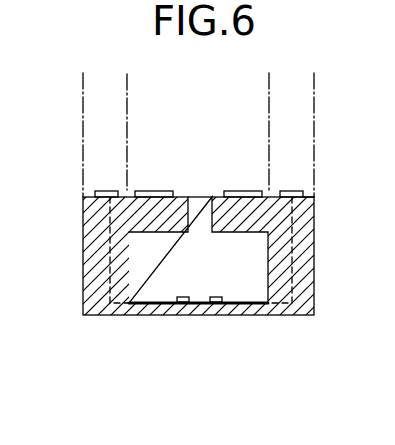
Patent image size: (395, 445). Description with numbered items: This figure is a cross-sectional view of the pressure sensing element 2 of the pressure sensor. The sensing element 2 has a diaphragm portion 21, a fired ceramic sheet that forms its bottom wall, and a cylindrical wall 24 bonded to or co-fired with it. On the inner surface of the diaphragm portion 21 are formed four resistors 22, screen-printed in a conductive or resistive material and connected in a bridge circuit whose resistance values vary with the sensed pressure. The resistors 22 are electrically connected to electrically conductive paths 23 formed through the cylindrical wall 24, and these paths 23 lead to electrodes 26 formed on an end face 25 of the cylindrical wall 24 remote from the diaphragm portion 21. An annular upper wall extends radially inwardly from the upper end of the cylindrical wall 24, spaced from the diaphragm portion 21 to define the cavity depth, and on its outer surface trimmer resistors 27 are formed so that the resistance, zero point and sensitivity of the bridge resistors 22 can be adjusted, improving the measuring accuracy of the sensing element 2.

The pressure sensing element 2 is at (290, 334).
The diaphragm portion 21 is at (148, 306).
The resistors 22 is at (181, 297).
The electrically conductive paths 23 is at (110, 268).
The cylindrical wall 24 is at (308, 228).
The end face 25 is at (310, 191).
The electrodes 26 is at (104, 191).
The trimmer resistors 27 is at (156, 191).